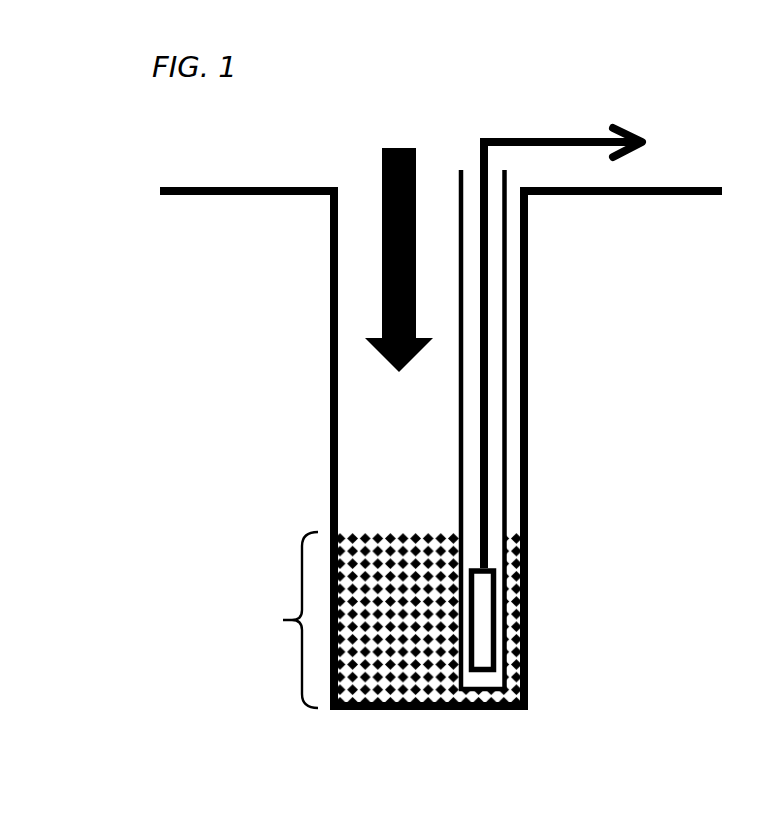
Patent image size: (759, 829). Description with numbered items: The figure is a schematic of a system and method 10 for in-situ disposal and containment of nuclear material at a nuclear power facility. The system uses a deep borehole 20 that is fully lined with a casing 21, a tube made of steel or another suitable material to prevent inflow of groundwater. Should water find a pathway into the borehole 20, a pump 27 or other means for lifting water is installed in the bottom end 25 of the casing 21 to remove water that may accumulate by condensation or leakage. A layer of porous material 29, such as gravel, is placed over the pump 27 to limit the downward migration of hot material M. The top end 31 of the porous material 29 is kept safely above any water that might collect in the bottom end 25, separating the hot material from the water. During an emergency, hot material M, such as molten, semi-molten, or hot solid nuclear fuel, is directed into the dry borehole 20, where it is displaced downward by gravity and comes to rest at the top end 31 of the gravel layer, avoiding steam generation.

The system and method of its use 10 is at (240, 343).
The borehole 20 is at (387, 397).
The casing 21 is at (528, 418).
The bottom end of borehole 25 is at (405, 712).
The pump or artificial lift device 27 is at (499, 617).
The porous material 29 is at (279, 620).
The top end of porous material 31 is at (382, 525).
The hot material M is at (382, 168).